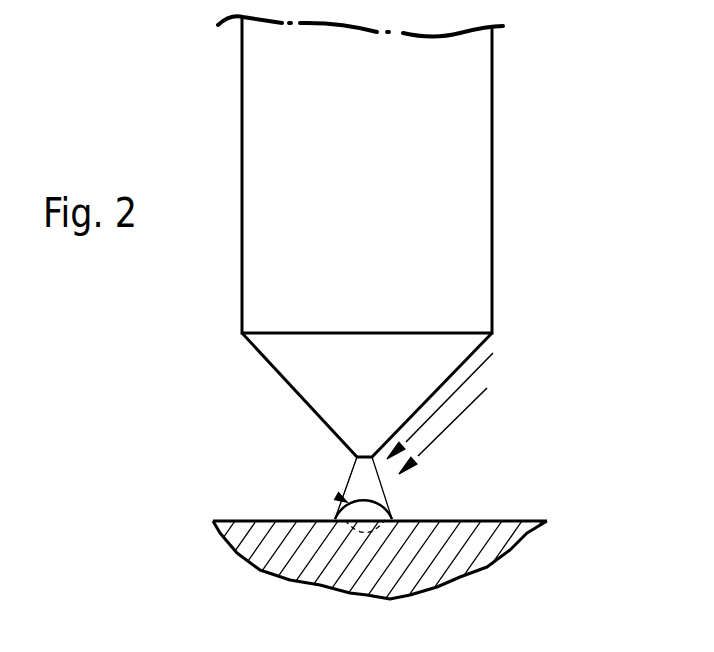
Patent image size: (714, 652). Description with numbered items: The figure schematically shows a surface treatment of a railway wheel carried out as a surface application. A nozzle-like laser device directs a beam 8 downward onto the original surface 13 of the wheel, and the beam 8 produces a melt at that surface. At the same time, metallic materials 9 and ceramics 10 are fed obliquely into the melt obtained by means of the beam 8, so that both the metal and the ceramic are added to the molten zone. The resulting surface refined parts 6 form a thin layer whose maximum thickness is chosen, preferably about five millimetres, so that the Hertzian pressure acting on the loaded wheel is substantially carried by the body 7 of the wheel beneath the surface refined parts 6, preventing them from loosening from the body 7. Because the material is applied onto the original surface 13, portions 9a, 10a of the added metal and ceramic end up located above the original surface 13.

The surface refined parts 6 is at (338, 497).
The body 7 is at (477, 558).
The beam 8 is at (352, 474).
The metallic materials 9 is at (482, 368).
The ceramics 10 is at (468, 410).
The portions of metallic material 9a is at (377, 500).
The portions of ceramic material 10a is at (365, 526).
The original surface 13 is at (273, 519).